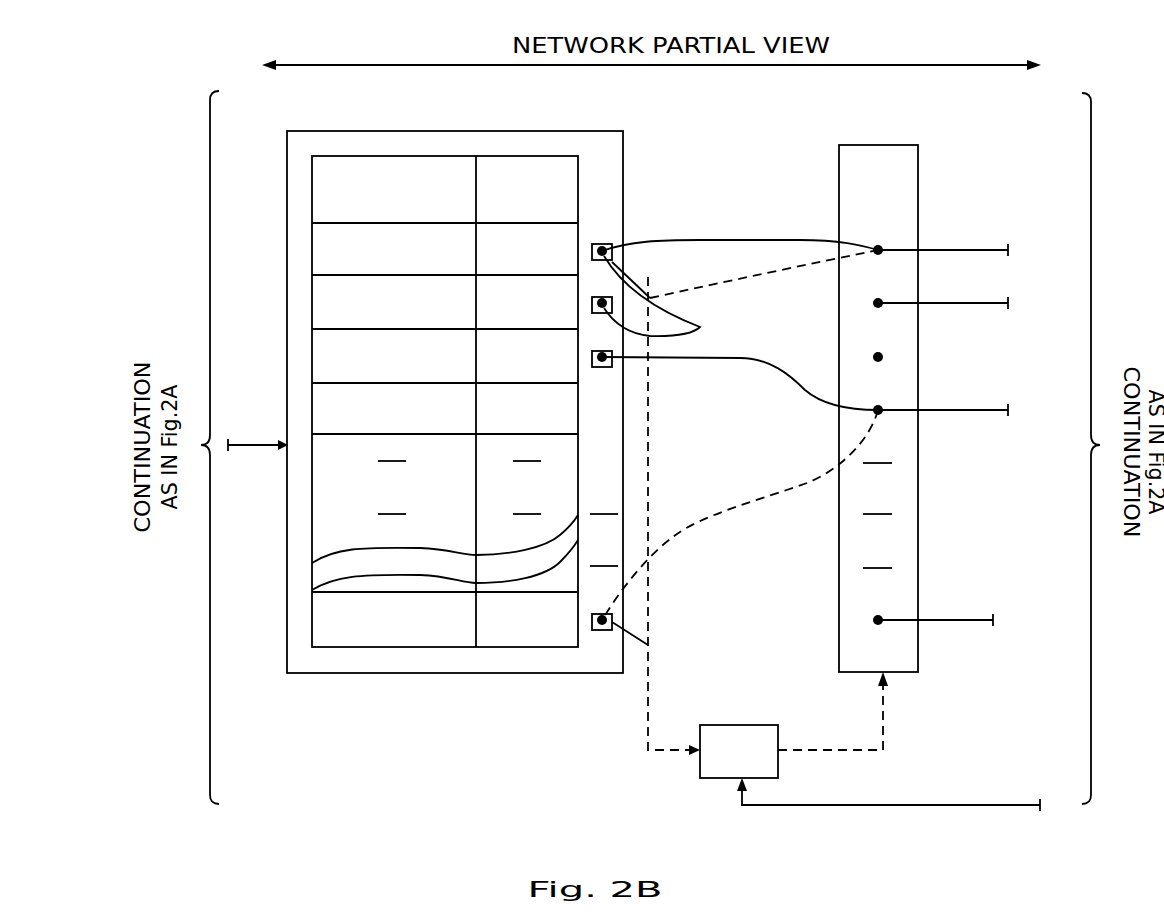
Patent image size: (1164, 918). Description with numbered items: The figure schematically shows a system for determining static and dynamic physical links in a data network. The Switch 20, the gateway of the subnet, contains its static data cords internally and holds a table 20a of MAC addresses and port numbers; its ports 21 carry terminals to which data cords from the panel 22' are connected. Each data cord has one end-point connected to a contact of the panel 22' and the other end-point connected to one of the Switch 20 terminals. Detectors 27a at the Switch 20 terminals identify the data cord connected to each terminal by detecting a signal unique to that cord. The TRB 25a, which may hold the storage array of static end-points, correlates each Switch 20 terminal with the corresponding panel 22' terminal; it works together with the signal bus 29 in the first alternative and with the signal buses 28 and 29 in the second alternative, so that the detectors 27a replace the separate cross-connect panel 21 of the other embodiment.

The Switch 20 is at (388, 131).
The MAC address / port number table 20a is at (495, 156).
The cross-connect panel 21 is at (650, 329).
The detectors 27a is at (563, 702).
The panel 22' is at (873, 383).
The TRB 25a is at (728, 725).
The signal bus 28 is at (887, 710).
The signal bus 29 is at (647, 715).